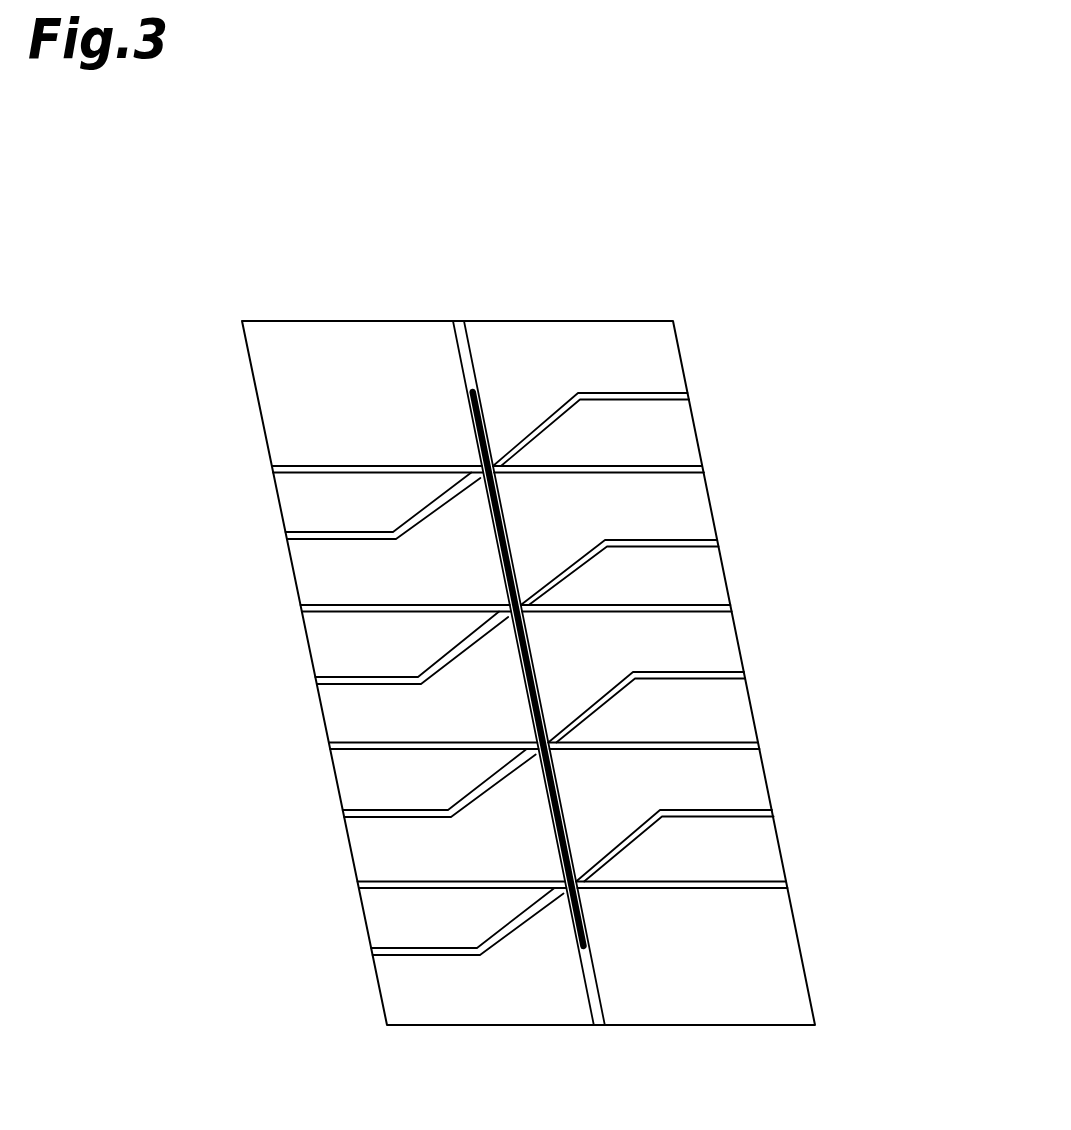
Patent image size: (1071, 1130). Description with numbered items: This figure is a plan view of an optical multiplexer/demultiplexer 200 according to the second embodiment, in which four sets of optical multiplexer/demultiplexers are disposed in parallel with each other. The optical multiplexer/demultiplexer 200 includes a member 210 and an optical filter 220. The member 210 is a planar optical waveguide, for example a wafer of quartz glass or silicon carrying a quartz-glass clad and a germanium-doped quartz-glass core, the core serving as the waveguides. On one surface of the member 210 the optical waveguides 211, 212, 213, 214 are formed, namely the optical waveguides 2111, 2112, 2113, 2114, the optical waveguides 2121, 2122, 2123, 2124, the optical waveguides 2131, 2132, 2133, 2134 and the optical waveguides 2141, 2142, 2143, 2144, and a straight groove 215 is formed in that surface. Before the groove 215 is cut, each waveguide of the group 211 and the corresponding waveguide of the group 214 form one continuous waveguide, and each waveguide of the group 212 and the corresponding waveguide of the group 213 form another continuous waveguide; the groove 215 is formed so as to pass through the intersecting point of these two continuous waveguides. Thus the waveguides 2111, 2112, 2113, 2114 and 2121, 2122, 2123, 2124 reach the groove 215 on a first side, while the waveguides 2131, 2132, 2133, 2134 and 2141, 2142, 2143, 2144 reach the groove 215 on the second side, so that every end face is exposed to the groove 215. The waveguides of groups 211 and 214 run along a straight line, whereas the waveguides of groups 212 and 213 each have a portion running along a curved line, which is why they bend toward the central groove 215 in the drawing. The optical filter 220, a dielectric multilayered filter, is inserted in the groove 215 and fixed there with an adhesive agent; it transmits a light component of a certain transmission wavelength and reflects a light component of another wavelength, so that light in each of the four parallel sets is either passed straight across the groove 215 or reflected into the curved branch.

The optical multiplexer/demultiplexer 200 is at (565, 296).
The member 210 is at (463, 1026).
The groove 215 is at (599, 1021).
The optical filter 220 is at (571, 925).
The optical waveguides 211 is at (374, 700).
The optical waveguides 212 is at (380, 744).
The optical waveguides 213 is at (692, 637).
The optical waveguides 214 is at (701, 692).
The optical waveguide 2111 is at (298, 473).
The optical waveguide 2112 is at (322, 612).
The optical waveguide 2113 is at (348, 749).
The optical waveguide 2114 is at (376, 888).
The optical waveguide 2121 is at (305, 540).
The optical waveguide 2122 is at (335, 685).
The optical waveguide 2123 is at (362, 818).
The optical waveguide 2124 is at (390, 956).
The optical waveguide 2131 is at (660, 402).
The optical waveguide 2132 is at (693, 547).
The optical waveguide 2133 is at (720, 679).
The optical waveguide 2134 is at (760, 817).
The optical waveguide 2141 is at (675, 473).
The optical waveguide 2142 is at (706, 612).
The optical waveguide 2143 is at (735, 750).
The optical waveguide 2144 is at (770, 889).